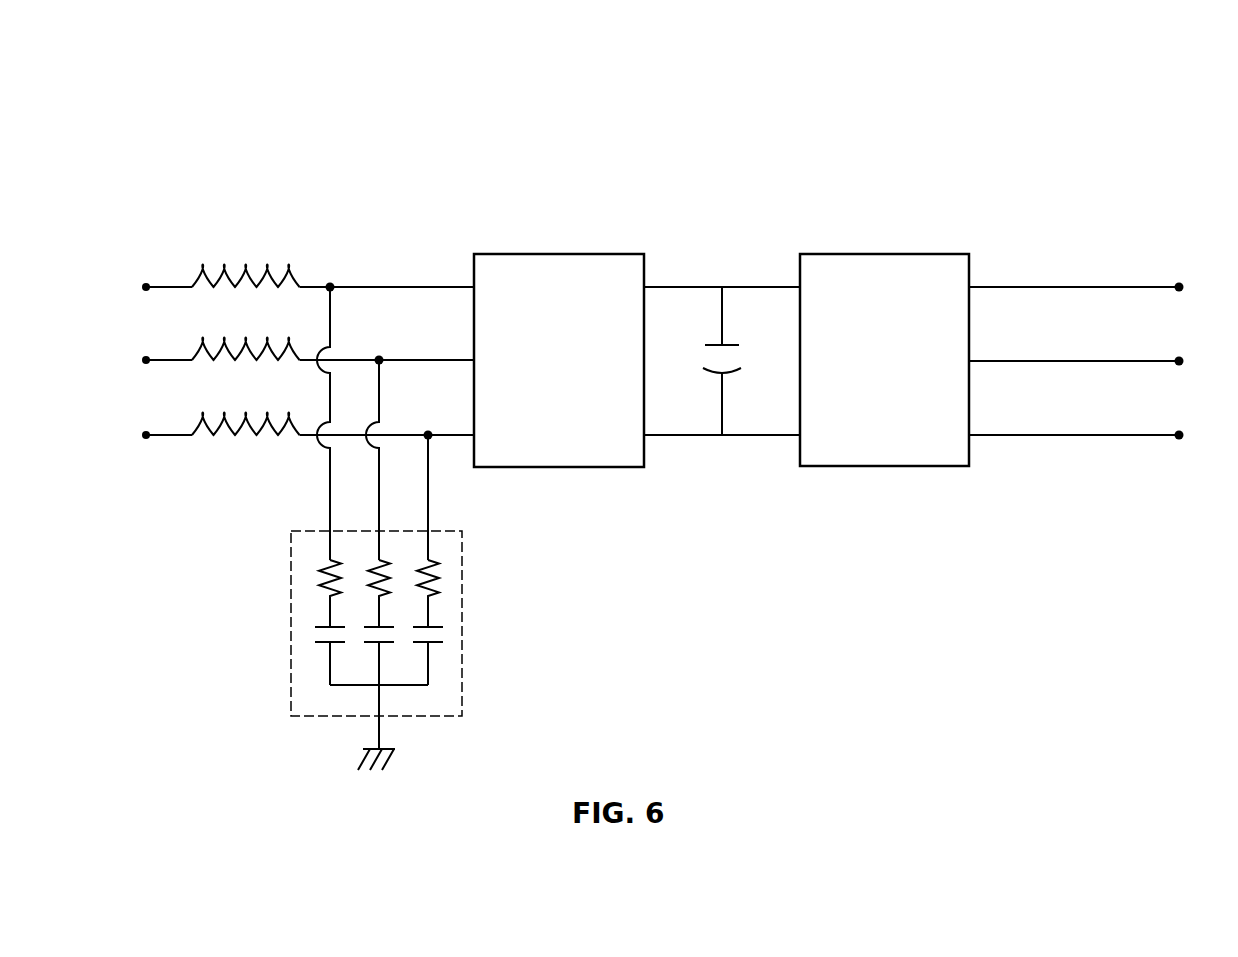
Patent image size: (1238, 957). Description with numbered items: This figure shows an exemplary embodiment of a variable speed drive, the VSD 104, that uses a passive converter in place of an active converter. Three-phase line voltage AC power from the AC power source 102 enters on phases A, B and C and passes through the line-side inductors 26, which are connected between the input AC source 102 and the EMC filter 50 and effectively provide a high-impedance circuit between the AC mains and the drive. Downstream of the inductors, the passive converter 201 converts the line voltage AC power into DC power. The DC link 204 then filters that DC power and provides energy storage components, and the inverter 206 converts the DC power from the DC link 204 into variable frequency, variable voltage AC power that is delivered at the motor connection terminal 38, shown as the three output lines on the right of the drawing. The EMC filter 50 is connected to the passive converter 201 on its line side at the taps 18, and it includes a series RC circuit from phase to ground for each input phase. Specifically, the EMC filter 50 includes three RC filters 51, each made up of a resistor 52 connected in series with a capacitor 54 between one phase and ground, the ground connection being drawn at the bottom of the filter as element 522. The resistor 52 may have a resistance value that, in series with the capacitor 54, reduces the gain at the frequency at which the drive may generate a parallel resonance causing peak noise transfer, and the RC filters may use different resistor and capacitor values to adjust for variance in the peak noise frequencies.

The AC power source 102 is at (164, 171).
The VSD 104 is at (689, 176).
The line-side inductors 26 is at (250, 262).
The taps 18 is at (331, 281).
The passive converter 201 is at (557, 254).
The DC link 204 is at (702, 328).
The inverter 206 is at (884, 254).
The motor connection terminal 38 is at (1177, 282).
The EMC filter 50 is at (476, 565).
The RC filter 51 is at (393, 544).
The resistor 52 is at (436, 594).
The capacitor 54 is at (446, 634).
The ground 522 is at (393, 758).